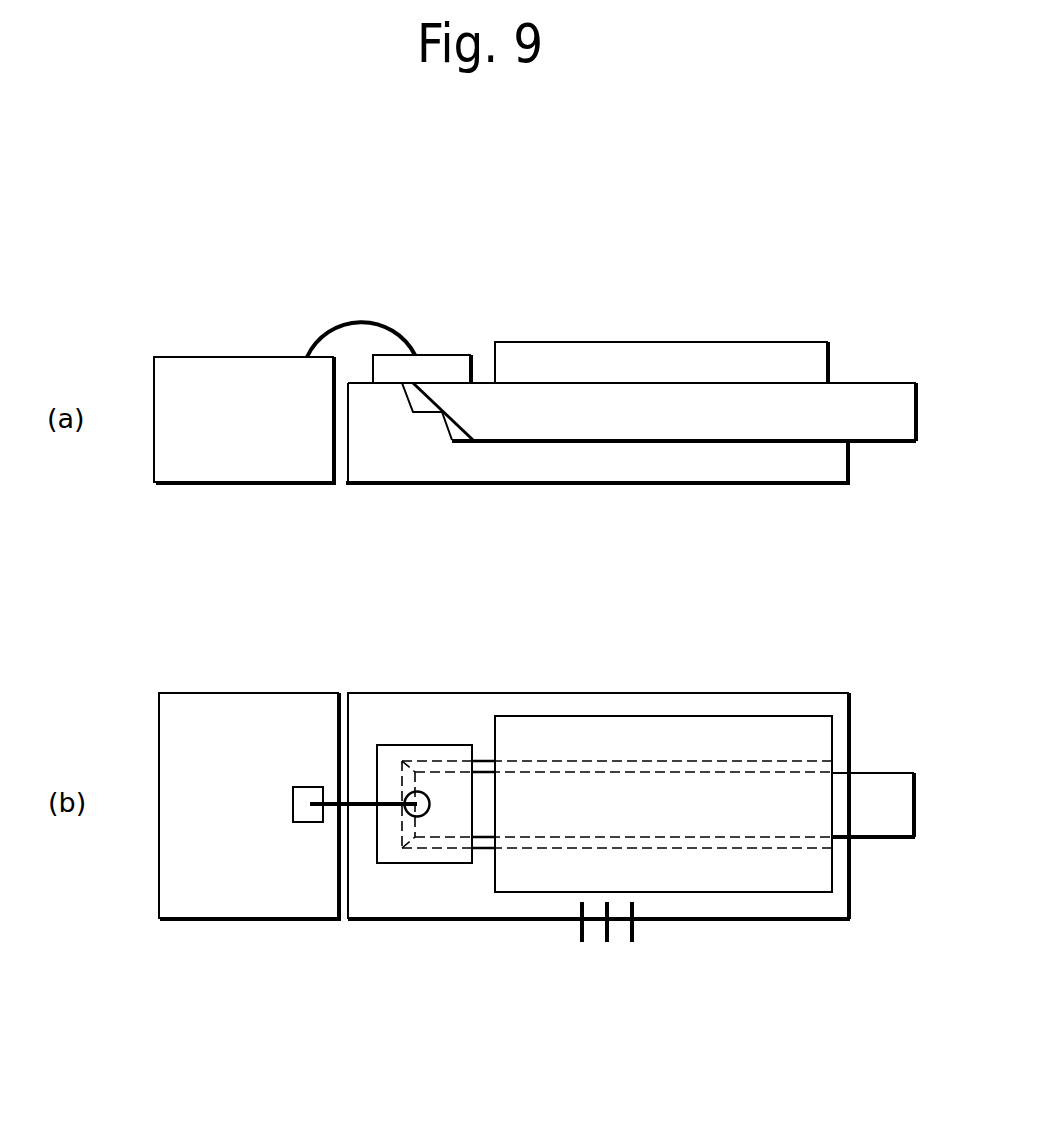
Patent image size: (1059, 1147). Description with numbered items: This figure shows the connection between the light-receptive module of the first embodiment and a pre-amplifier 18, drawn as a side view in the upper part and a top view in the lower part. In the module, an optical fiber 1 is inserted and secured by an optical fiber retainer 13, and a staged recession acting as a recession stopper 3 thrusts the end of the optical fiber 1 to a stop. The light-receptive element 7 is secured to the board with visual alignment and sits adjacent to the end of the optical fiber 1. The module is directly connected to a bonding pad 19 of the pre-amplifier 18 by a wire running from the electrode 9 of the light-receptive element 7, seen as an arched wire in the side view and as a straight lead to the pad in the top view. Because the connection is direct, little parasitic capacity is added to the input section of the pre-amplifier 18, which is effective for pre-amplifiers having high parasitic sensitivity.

The optical fiber 1 is at (882, 390).
The recession stopper 3 is at (441, 414).
The light-receptive element 7 is at (455, 355).
The electrode 9 is at (424, 815).
The optical fiber retainer 13 is at (668, 350).
The pre-amplifier 18 is at (227, 372).
The bonding pad 19 is at (363, 322).